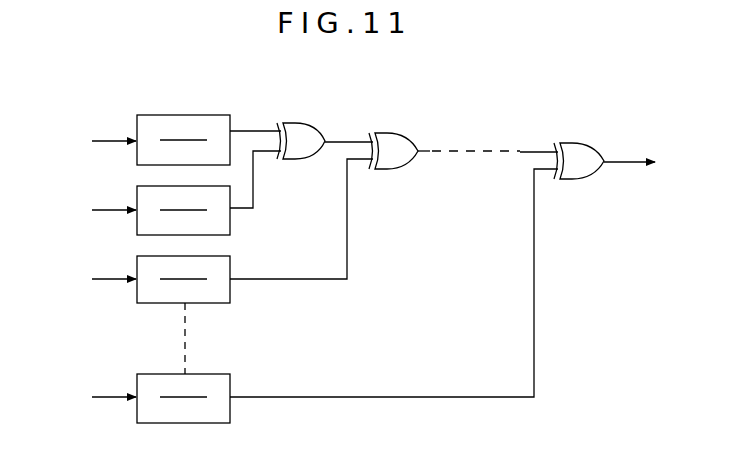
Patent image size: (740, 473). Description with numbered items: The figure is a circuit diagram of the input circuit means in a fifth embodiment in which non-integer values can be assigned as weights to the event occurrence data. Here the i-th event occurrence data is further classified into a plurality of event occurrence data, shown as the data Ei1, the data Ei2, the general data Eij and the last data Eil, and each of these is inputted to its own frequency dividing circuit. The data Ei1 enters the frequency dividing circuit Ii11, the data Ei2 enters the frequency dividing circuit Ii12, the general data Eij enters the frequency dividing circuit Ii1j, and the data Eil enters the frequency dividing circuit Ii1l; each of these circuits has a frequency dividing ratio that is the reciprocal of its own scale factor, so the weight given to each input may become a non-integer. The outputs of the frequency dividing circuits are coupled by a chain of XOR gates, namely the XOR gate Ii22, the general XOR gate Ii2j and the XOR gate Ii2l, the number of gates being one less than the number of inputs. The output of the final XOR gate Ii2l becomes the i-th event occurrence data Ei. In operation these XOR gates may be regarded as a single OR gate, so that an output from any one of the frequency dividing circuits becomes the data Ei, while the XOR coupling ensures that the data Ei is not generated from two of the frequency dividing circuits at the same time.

The frequency dividing circuit Ii11 is at (213, 118).
The frequency dividing circuit Ii12 is at (230, 225).
The frequency dividing circuit Ii1j is at (230, 298).
The frequency dividing circuit Ii1l is at (230, 418).
The XOR gate Ii22 is at (307, 122).
The XOR gate Ii2j is at (391, 134).
The XOR gate Ii2l is at (578, 146).
The event occurrence data Ei1 is at (91, 141).
The event occurrence data Ei2 is at (91, 211).
The event occurrence data Eij is at (91, 280).
The event occurrence data Eil is at (91, 397).
The i-th event occurrence data Ei is at (624, 164).